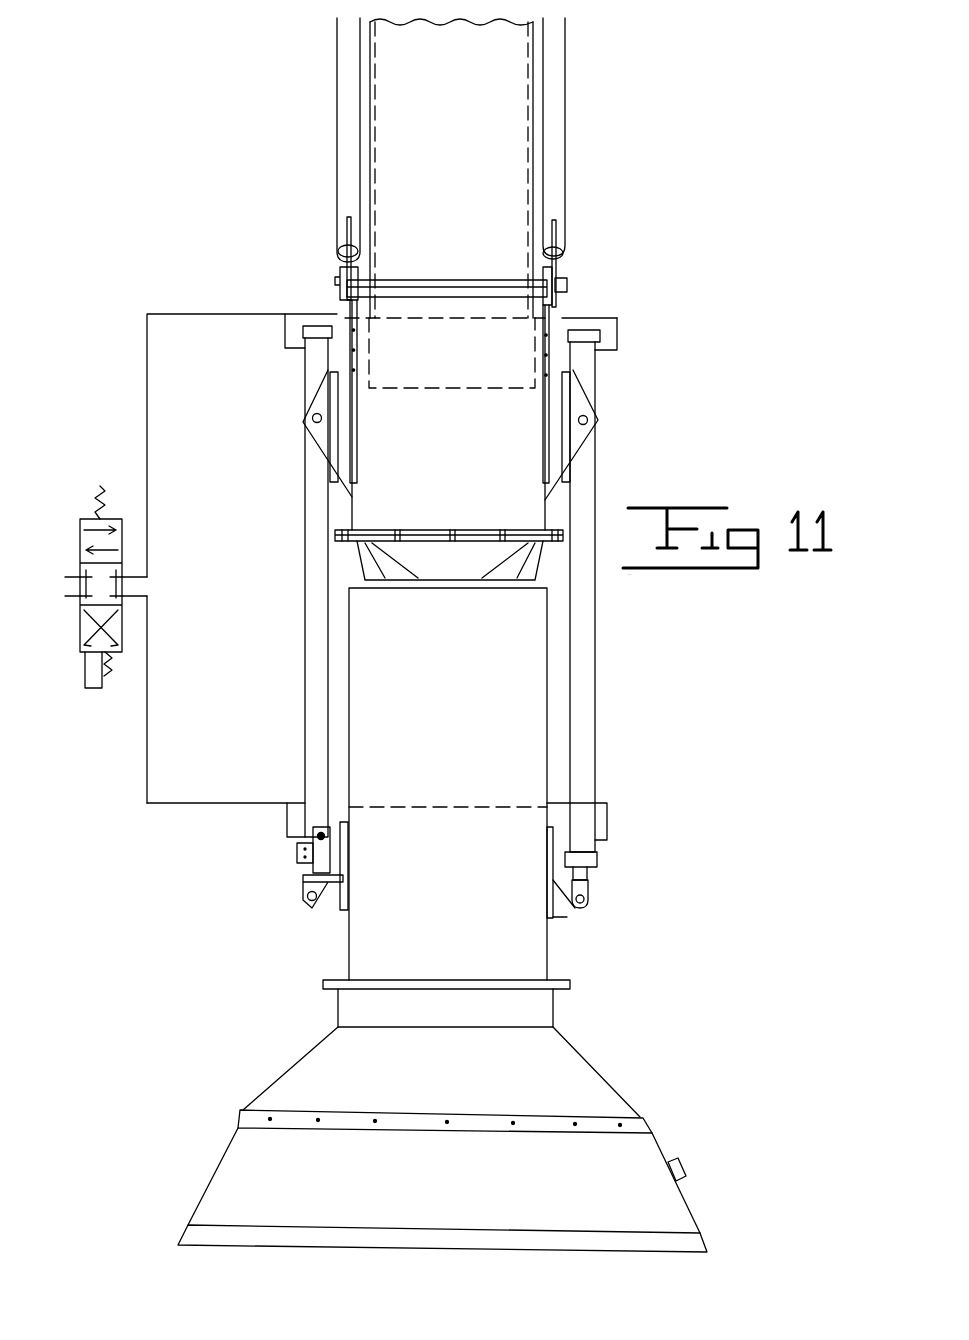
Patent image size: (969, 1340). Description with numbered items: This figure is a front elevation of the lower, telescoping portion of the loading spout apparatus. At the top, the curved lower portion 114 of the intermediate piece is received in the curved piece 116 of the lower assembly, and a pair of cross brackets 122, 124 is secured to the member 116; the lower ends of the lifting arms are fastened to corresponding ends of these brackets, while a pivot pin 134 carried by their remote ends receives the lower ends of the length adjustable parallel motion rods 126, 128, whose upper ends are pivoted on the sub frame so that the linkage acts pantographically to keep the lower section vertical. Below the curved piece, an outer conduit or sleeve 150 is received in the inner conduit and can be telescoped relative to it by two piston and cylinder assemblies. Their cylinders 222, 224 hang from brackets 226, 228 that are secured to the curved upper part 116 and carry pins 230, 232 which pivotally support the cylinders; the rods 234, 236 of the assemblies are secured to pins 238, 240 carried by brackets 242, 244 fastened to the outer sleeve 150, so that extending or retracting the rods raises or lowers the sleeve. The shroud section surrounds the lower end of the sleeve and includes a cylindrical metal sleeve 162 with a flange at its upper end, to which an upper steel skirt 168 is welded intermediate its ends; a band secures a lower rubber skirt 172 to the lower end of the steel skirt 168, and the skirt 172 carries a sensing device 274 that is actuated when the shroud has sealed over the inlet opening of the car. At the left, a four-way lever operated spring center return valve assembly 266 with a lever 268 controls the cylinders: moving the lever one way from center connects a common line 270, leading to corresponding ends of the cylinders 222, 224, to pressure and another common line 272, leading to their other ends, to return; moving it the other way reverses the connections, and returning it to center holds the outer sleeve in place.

The curved lower portion 114 is at (515, 226).
The curved piece 116 is at (380, 497).
The cross bracket 122 is at (352, 330).
The cross bracket 124 is at (543, 317).
The parallel motion rod 126 is at (340, 127).
The parallel motion rod 128 is at (567, 130).
The pivot pin 134 is at (462, 280).
The outer conduit or sleeve 150 is at (350, 735).
The cylindrical metal sleeve 162 is at (335, 985).
The upper steel skirt 168 is at (307, 1052).
The lower rubber skirt 172 is at (222, 1163).
The cylinder 222 is at (305, 670).
The cylinder 224 is at (595, 720).
The bracket 226 is at (323, 380).
The bracket 228 is at (587, 390).
The pin 230 is at (313, 420).
The pin 232 is at (592, 425).
The rod 234 is at (298, 850).
The rod 236 is at (592, 875).
The pin 238 is at (305, 890).
The pin 240 is at (580, 905).
The bracket 242 is at (313, 905).
The bracket 244 is at (565, 915).
The four-way lever operated spring center return valve assembly 266 is at (78, 622).
The lever 268 is at (93, 688).
The common line 270 is at (178, 313).
The common line 272 is at (170, 803).
The sensing device 274 is at (693, 1150).